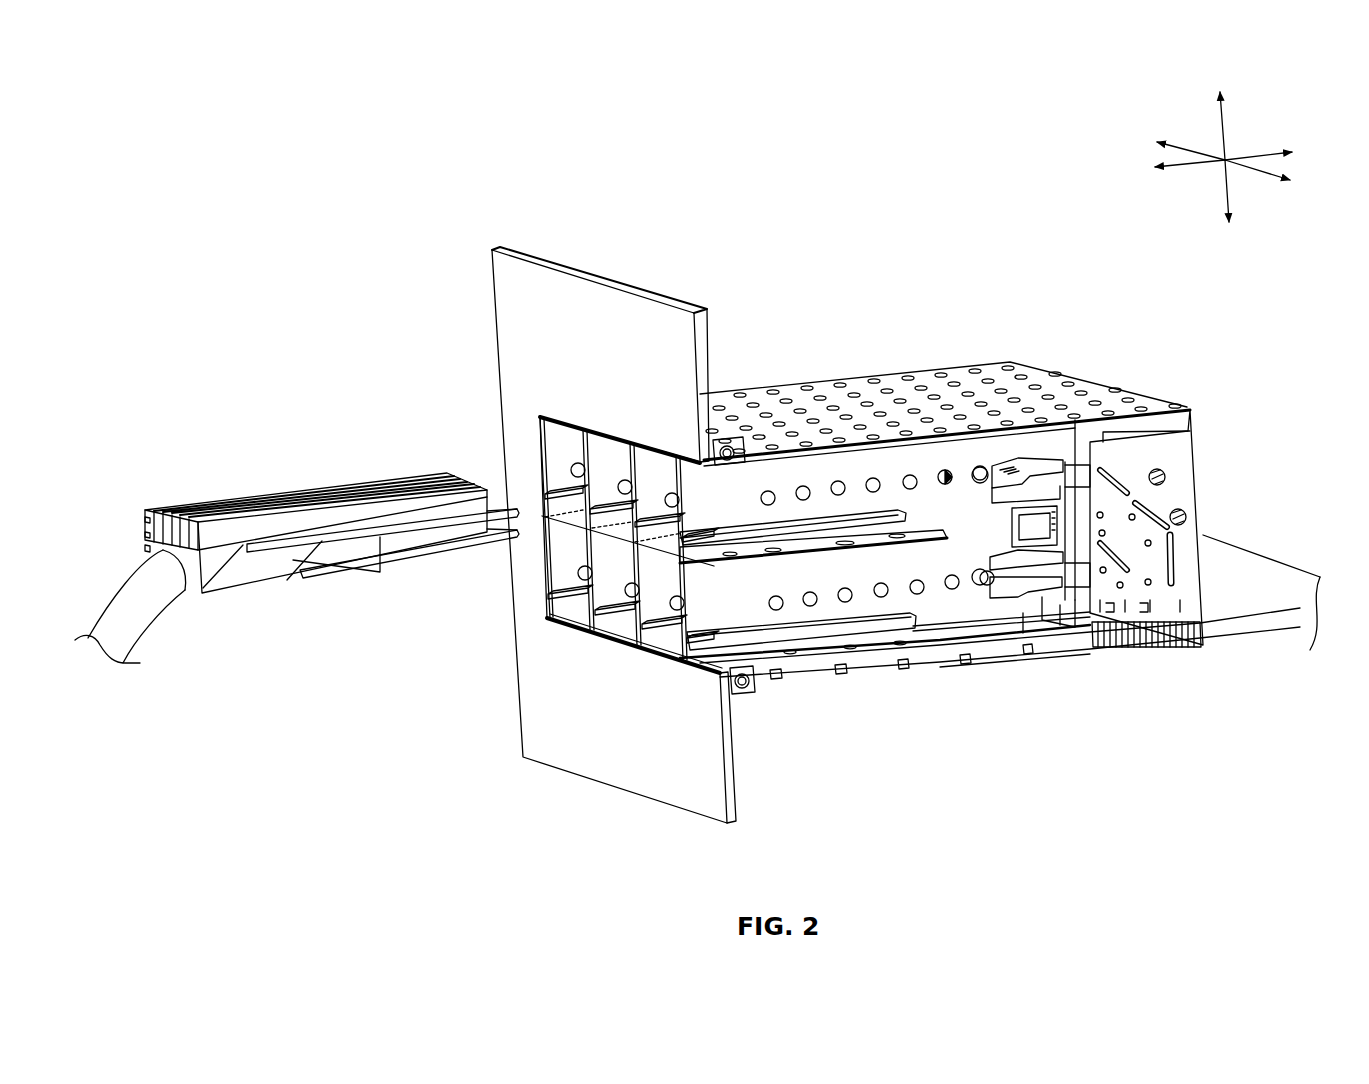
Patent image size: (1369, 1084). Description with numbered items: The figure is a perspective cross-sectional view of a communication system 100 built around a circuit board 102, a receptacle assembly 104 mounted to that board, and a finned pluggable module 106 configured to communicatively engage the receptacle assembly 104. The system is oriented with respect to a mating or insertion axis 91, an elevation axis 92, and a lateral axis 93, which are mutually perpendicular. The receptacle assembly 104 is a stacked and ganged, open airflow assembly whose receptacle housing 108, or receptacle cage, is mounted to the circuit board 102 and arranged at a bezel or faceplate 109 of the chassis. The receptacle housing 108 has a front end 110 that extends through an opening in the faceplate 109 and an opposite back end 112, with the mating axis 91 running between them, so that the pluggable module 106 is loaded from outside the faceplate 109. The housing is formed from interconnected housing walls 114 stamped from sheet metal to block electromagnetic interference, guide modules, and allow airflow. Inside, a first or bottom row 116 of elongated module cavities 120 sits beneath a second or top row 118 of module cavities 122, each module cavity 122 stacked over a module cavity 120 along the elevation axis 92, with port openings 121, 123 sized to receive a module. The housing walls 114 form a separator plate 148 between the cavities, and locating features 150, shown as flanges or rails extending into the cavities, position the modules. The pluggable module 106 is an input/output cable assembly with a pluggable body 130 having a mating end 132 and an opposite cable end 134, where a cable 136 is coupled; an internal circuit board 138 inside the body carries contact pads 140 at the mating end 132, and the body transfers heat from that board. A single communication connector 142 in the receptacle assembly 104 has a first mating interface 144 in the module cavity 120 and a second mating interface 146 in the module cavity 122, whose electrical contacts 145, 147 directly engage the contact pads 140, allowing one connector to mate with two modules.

The communication system 100 is at (462, 158).
The mating axis 91 is at (1265, 150).
The elevation axis 92 is at (1218, 125).
The lateral axis 93 is at (1252, 177).
The circuit board 102 is at (1290, 575).
The receptacle assembly 104 is at (933, 539).
The pluggable module 106 is at (301, 551).
The receptacle housing 108 is at (945, 510).
The faceplate 109 is at (625, 322).
The front end 110 is at (523, 443).
The back end 112 is at (1194, 427).
The housing walls 114 is at (748, 415).
The first row 116 is at (537, 600).
The second row 118 is at (537, 475).
The module cavity 120 is at (754, 618).
The port opening 121 is at (718, 647).
The module cavity 122 is at (756, 509).
The port opening 123 is at (710, 502).
The pluggable body 130 is at (260, 563).
The mating end 132 is at (527, 545).
The cable end 134 is at (142, 545).
The cable 136 is at (147, 630).
The internal circuit board 138 is at (433, 547).
The contact pads 140 is at (463, 540).
The communication connector 142 is at (1180, 482).
The first mating interface 144 is at (1033, 615).
The electrical contacts 145 is at (1023, 582).
The second mating interface 146 is at (1018, 450).
The electrical contacts 147 is at (1013, 485).
The separator plate 148 is at (928, 540).
The locating features 150 is at (843, 543).